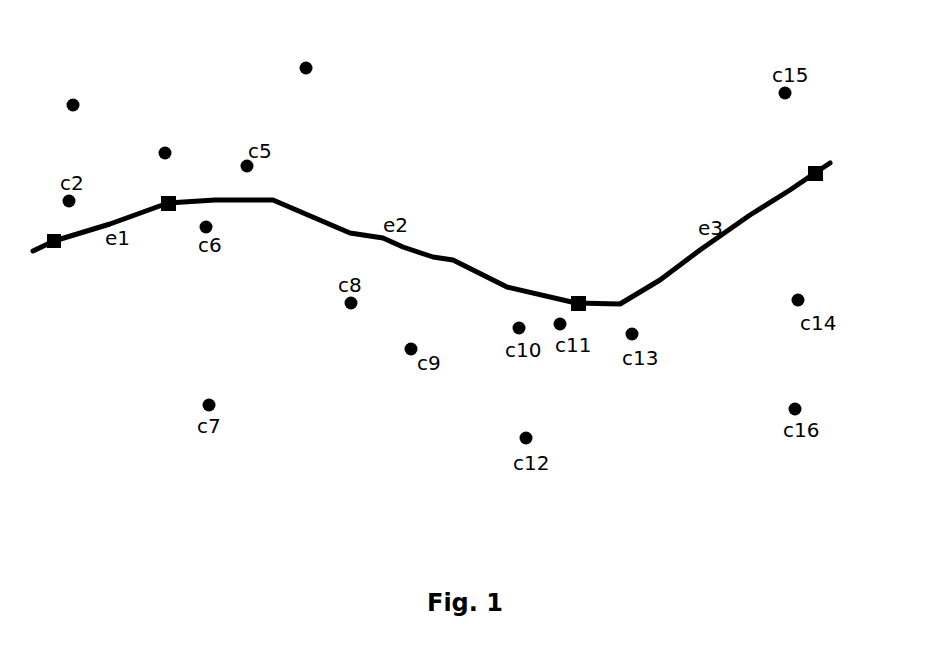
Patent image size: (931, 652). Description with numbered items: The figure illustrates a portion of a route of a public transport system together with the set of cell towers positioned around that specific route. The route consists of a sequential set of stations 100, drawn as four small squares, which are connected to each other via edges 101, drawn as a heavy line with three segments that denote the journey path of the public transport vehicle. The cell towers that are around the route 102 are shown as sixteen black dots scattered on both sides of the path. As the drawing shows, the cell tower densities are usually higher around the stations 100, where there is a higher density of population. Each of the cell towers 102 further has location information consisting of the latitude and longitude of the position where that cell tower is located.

The stations 100 is at (158, 240).
The edges 101 is at (432, 250).
The cell towers around the route 102 is at (284, 57).